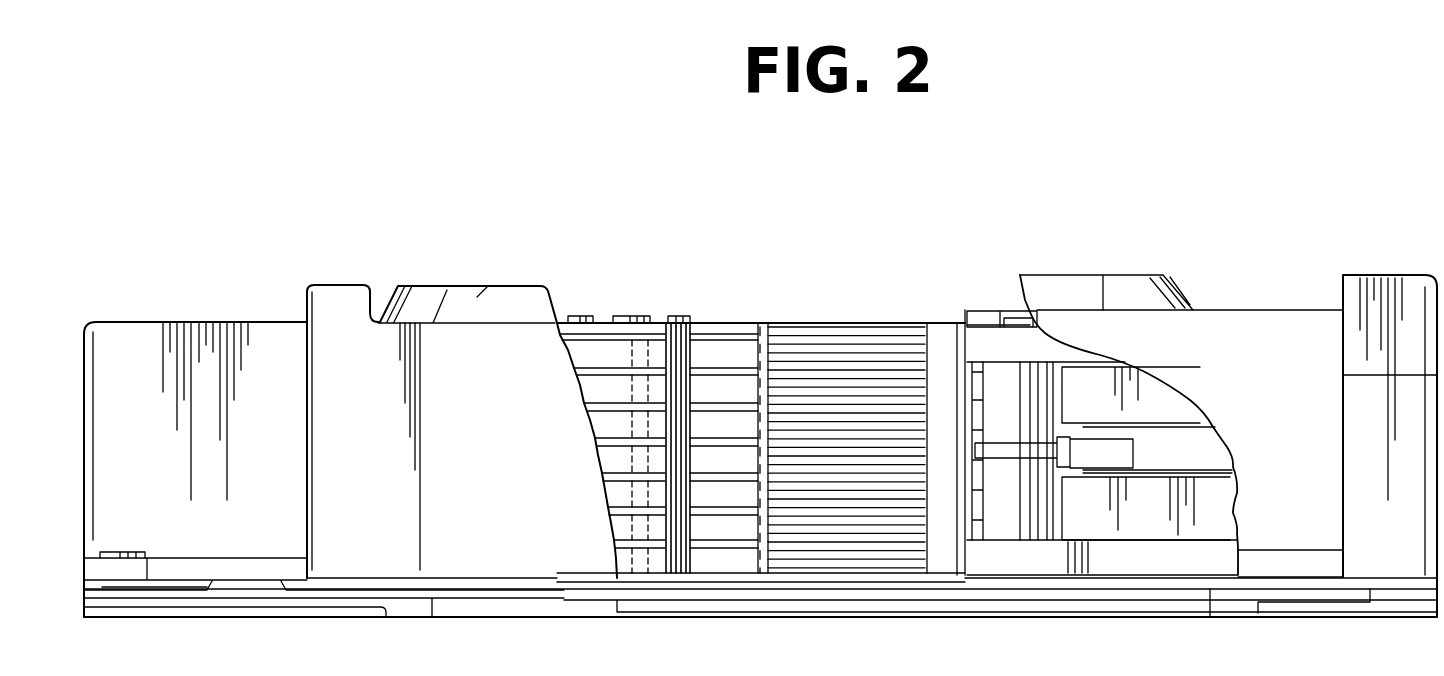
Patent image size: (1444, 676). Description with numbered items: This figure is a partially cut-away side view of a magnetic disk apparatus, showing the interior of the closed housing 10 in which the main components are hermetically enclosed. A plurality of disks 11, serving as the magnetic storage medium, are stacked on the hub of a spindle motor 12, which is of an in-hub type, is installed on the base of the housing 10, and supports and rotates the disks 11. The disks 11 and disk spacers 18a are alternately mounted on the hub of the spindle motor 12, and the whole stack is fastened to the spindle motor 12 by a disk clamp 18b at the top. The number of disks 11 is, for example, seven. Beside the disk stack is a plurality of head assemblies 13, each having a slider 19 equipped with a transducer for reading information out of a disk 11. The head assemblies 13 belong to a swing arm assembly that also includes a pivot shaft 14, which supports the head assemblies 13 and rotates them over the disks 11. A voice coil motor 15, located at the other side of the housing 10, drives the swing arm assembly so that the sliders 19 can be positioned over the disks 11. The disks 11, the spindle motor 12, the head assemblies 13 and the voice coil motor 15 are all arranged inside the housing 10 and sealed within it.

The closed housing 10 is at (463, 358).
The disks 11 is at (725, 543).
The spindle motor 12 is at (642, 556).
The head assemblies 13 is at (843, 390).
The pivot shaft 14 is at (1020, 310).
The voice coil motor 15 is at (1193, 452).
The disk spacers 18a is at (618, 385).
The disk clamp 18b is at (590, 330).
The slider 19 is at (778, 330).